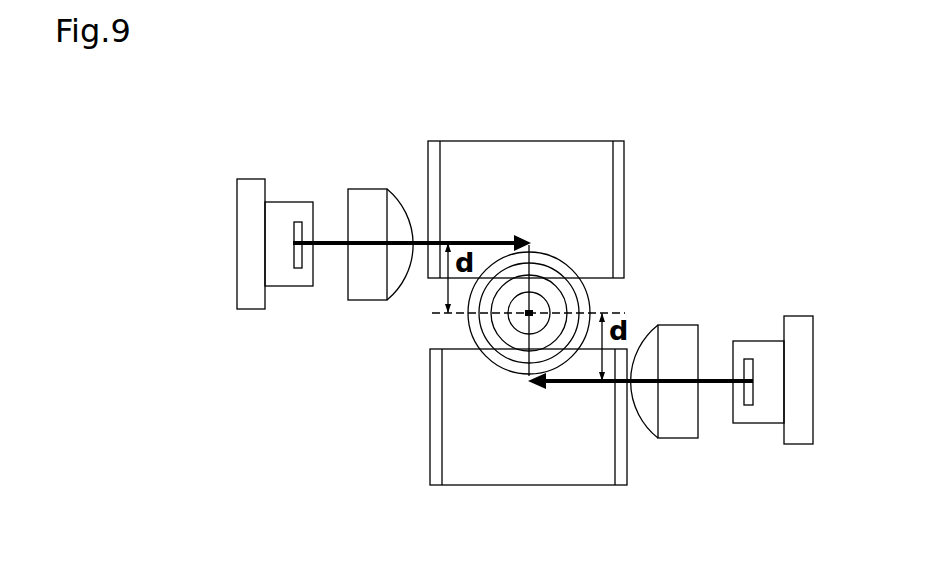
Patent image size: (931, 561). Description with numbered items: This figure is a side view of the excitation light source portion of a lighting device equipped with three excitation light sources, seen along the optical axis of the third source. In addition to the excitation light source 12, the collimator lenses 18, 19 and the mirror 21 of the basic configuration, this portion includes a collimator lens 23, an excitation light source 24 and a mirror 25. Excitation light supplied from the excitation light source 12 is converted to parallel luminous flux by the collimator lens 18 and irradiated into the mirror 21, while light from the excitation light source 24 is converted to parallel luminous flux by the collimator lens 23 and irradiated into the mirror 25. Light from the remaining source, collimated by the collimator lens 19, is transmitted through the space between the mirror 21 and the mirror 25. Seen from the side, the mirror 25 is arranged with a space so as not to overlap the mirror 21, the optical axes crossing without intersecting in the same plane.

The excitation light source 12 is at (793, 316).
The collimator lens 18 is at (695, 325).
The collimator lens 19 is at (473, 323).
The mirror 21 is at (437, 422).
The collimator lens 23 is at (368, 189).
The excitation light source 24 is at (243, 179).
The mirror 25 is at (528, 141).